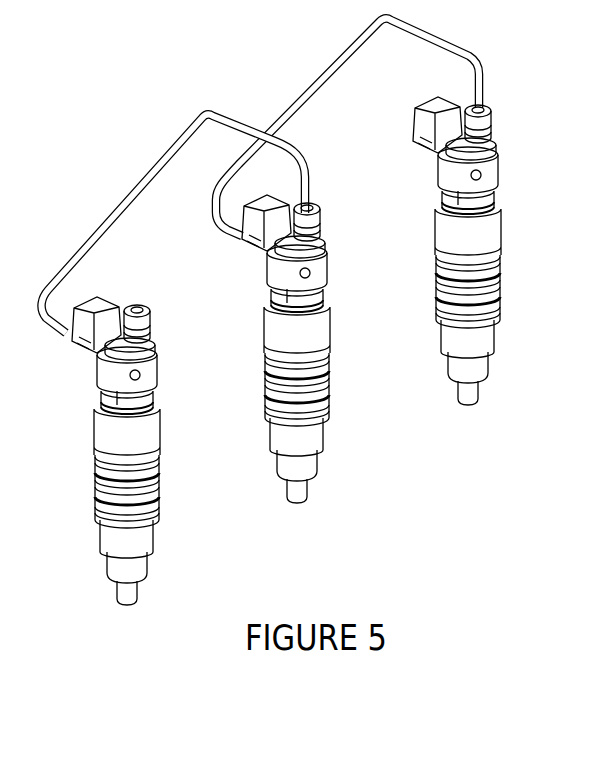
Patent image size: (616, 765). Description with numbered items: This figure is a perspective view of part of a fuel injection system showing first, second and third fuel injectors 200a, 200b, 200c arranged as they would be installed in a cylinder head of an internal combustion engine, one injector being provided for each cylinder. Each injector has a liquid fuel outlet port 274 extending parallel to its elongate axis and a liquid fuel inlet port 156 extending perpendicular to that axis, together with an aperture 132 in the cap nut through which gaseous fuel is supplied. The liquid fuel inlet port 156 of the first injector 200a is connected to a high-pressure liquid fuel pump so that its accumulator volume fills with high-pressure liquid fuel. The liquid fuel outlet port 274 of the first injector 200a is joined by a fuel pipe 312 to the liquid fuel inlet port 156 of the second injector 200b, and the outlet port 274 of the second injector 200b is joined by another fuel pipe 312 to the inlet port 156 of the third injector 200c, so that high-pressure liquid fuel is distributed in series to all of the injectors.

The fuel pipe 312 is at (334, 57).
The first fuel injector 200a is at (428, 233).
The second fuel injector 200b is at (258, 336).
The third fuel injector 200c is at (76, 456).
The liquid fuel outlet port 274 is at (140, 322).
The liquid fuel inlet port 156 is at (80, 346).
The aperture 132 is at (142, 488).